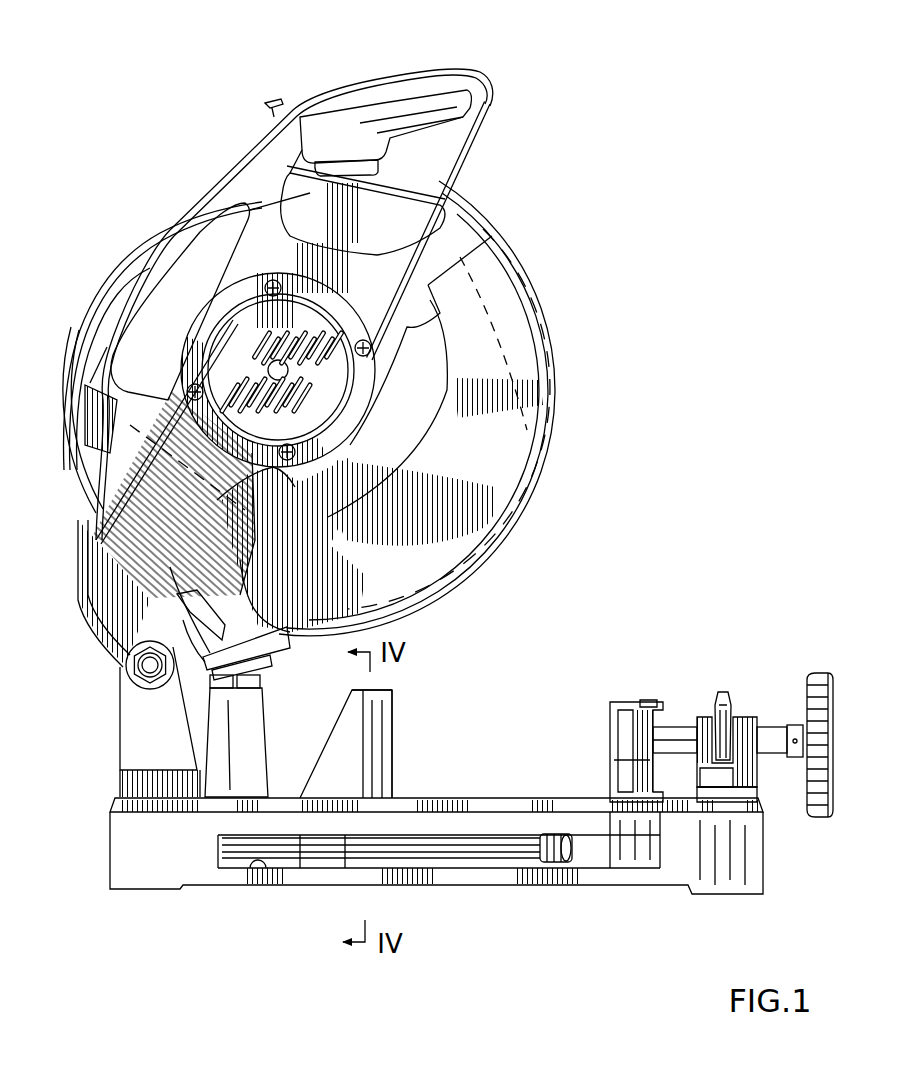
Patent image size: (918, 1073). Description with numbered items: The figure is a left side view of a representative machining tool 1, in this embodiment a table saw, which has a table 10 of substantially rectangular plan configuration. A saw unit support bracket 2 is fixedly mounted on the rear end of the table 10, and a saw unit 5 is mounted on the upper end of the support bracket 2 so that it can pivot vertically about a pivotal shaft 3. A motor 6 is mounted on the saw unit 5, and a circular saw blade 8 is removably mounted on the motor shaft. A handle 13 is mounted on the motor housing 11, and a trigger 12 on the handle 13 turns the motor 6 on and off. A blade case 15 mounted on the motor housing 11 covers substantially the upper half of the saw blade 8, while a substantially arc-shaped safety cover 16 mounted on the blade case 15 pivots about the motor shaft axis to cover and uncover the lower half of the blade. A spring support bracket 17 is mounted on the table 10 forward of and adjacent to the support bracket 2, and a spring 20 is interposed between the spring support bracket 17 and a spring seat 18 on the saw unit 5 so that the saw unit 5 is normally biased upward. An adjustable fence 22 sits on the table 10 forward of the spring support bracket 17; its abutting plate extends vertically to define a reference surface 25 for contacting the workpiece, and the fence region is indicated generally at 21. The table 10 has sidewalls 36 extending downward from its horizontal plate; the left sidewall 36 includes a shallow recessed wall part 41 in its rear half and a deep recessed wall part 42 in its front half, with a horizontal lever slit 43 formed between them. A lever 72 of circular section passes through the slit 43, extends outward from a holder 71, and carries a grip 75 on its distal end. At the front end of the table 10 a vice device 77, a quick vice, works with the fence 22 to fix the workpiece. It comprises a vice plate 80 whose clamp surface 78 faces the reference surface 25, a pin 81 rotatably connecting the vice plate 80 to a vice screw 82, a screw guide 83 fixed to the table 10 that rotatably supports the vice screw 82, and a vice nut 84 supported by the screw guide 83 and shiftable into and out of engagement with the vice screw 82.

The machining tool 1 is at (697, 585).
The saw unit support bracket 2 is at (140, 739).
The pivotal shaft 3 is at (147, 664).
The saw unit 5 is at (105, 612).
The motor 6 is at (248, 290).
The circular saw blade 8 is at (420, 392).
The table 10 is at (108, 848).
The motor housing 11 is at (220, 357).
The trigger 12 is at (365, 170).
The handle 13 is at (322, 108).
The blade case 15 is at (477, 237).
The safety cover 16 is at (525, 490).
The spring support bracket 17 is at (228, 778).
The spring seat 18 is at (105, 527).
The spring 20 is at (265, 603).
The fence 21 is at (404, 715).
The adjustable fence 22 is at (372, 752).
The reference surface 25 is at (392, 775).
The sidewalls 36 is at (710, 862).
The shallow recessed wall part 41 is at (293, 820).
The deep recessed wall part 42 is at (595, 850).
The lever slit 43 is at (250, 860).
The holder 71 is at (335, 855).
The lever 72 is at (485, 848).
The grip 75 is at (555, 852).
The vice device 77 is at (745, 690).
The clamp surface 78 is at (610, 725).
The vice plate 80 is at (615, 703).
The pin 81 is at (630, 775).
The vice screw 82 is at (673, 740).
The screw guide 83 is at (752, 770).
The vice nut 84 is at (722, 705).